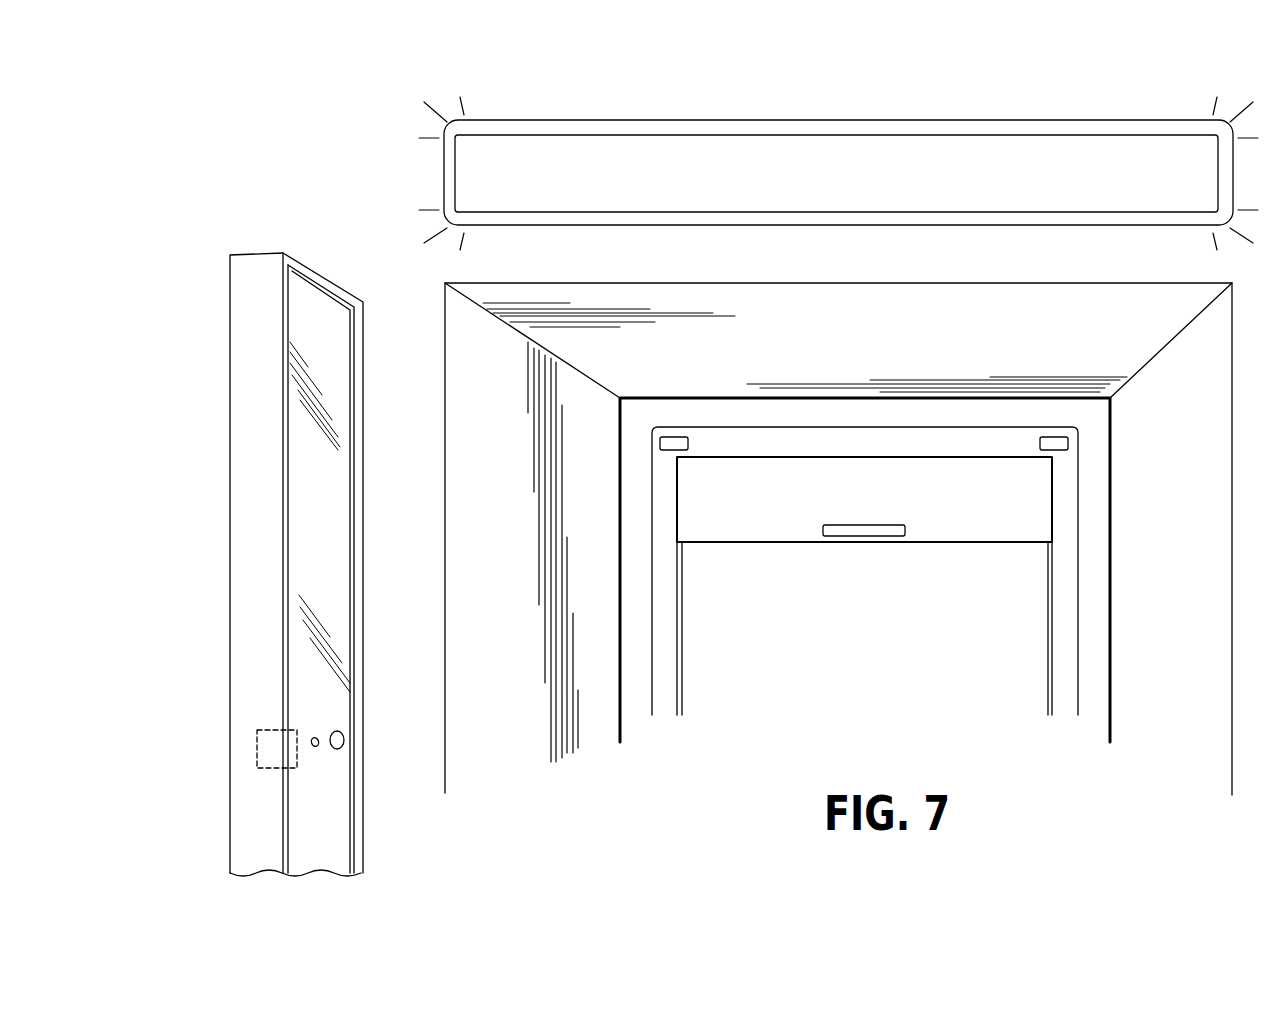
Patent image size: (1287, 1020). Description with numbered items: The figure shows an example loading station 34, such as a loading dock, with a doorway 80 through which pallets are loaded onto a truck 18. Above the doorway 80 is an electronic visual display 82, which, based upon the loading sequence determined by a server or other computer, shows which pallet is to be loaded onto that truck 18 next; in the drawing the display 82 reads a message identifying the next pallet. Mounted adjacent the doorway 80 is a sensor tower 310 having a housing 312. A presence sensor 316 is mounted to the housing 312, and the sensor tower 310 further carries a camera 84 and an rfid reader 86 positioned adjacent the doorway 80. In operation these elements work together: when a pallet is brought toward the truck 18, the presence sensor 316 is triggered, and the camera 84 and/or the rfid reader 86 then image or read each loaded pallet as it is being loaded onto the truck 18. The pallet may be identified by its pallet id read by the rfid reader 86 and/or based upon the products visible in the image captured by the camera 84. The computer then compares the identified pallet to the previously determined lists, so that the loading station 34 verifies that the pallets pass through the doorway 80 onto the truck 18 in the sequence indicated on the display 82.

The loading station 34 is at (343, 113).
The sensor tower 310 is at (275, 247).
The housing 312 is at (243, 540).
The rfid reader 86 is at (250, 750).
The camera 84 is at (344, 740).
The presence sensor 316 is at (320, 747).
The electronic visual display 82 is at (843, 121).
The truck 18 is at (993, 427).
The doorway 80 is at (1203, 465).